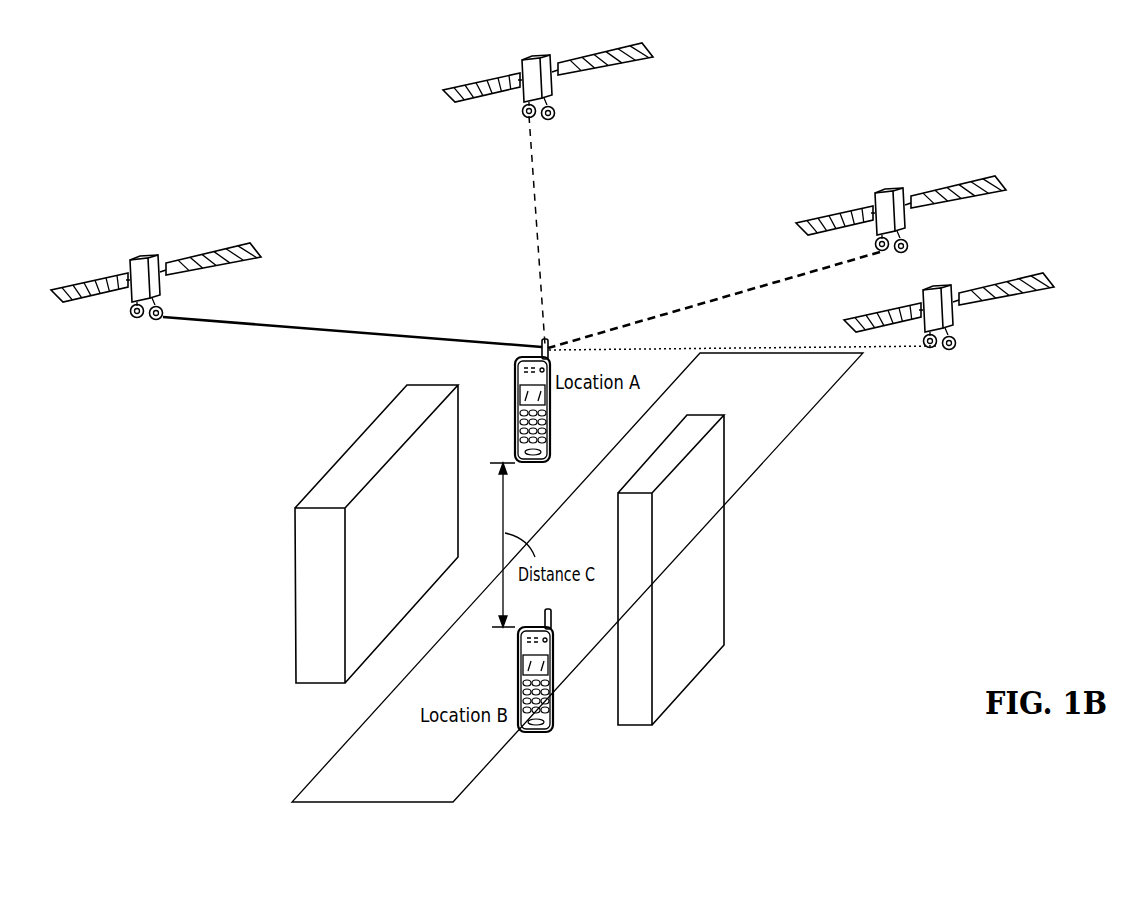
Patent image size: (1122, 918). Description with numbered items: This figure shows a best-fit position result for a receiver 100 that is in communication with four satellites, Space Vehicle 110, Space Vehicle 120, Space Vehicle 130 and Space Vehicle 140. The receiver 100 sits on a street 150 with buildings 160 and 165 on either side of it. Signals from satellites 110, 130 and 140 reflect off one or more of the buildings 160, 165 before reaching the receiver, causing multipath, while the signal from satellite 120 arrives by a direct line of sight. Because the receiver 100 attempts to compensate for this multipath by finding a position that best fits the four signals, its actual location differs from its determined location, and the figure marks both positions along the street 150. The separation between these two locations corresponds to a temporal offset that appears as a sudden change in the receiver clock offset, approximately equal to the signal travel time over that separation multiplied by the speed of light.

The receiver 100 is at (553, 410).
The Space Vehicle 110 is at (173, 236).
The Space Vehicle 120 is at (488, 121).
The Space Vehicle 130 is at (902, 174).
The Space Vehicle 140 is at (942, 271).
The street 150 is at (333, 782).
The building 160 is at (323, 495).
The building 165 is at (714, 582).